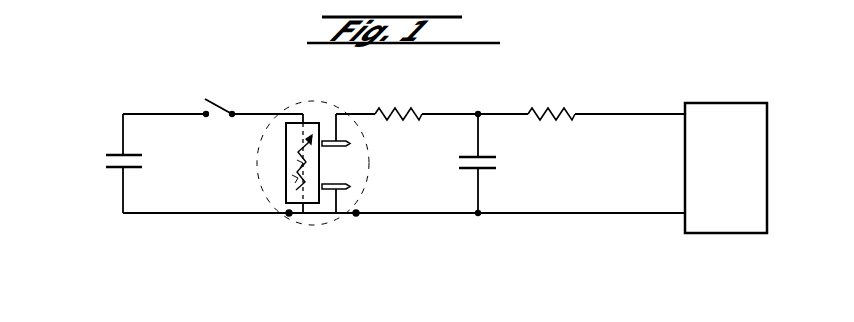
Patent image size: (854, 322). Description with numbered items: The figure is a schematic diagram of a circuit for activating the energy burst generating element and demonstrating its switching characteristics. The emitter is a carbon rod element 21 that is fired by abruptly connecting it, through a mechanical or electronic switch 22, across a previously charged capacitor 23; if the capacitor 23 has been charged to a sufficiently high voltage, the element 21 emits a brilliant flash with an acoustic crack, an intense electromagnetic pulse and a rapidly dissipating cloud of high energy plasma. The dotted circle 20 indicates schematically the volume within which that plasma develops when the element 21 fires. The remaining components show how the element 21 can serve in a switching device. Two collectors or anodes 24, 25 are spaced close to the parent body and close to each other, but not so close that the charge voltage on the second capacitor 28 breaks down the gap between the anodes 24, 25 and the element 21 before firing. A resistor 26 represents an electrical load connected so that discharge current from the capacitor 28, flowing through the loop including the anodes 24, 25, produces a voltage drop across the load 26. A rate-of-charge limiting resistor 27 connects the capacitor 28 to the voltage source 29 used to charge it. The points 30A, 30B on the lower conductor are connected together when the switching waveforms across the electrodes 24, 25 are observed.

The dotted circle 20 is at (322, 117).
The carbon rod element 21 is at (286, 170).
The switch 22 is at (221, 100).
The capacitor 23 is at (100, 160).
The collector or anode 24 is at (352, 144).
The collector or anode 25 is at (352, 187).
The resistor 26 is at (398, 108).
The rate-of-charge limiting resistor 27 is at (551, 110).
The second capacitor 28 is at (498, 166).
The voltage source 29 is at (736, 178).
The point 30A is at (290, 216).
The point 30B is at (356, 216).